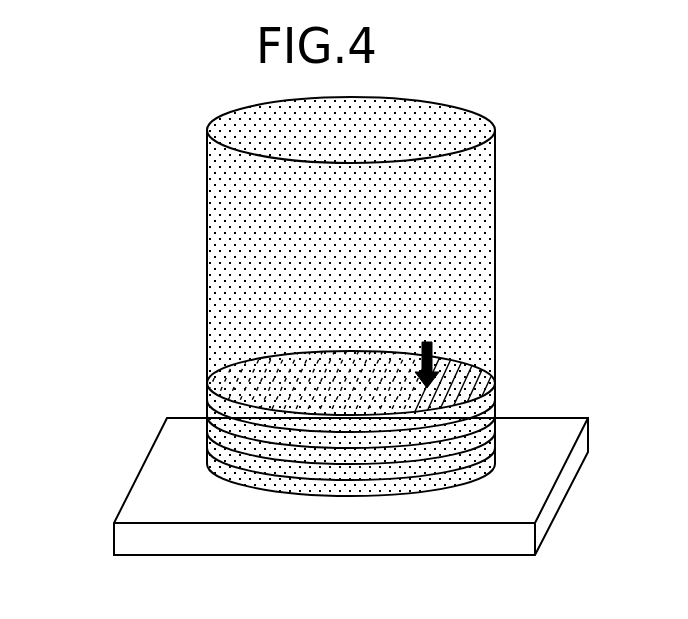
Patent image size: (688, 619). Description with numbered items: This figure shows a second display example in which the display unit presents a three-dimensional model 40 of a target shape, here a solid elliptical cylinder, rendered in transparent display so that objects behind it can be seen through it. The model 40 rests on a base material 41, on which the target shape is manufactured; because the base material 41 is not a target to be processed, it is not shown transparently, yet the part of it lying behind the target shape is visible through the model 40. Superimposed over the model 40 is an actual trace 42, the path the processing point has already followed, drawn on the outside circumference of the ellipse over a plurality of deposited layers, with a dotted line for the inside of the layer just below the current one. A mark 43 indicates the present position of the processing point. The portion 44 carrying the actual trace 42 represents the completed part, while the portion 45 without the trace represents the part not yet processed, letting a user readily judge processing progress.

The 3D model 40 is at (495, 192).
The base material 41 is at (137, 507).
The actual trace 42 is at (478, 371).
The mark 43 is at (433, 348).
The portion having completed being processed 44 is at (205, 388).
The portion not having been processed yet 45 is at (205, 130).